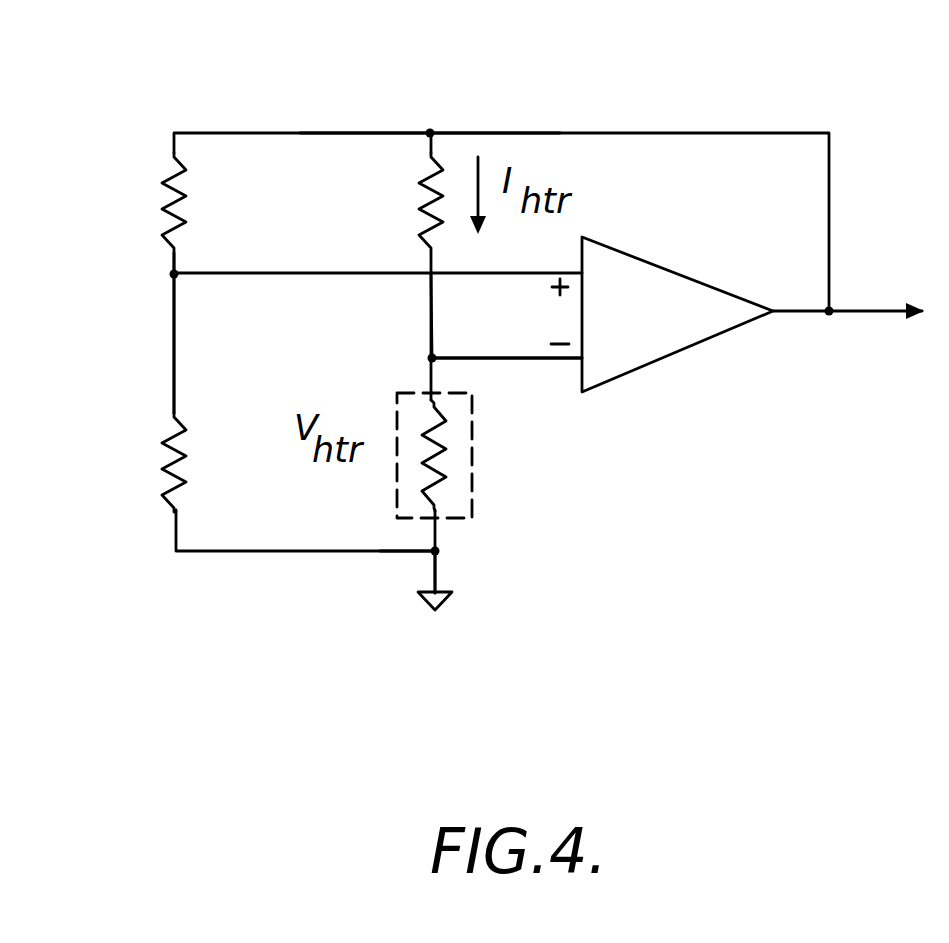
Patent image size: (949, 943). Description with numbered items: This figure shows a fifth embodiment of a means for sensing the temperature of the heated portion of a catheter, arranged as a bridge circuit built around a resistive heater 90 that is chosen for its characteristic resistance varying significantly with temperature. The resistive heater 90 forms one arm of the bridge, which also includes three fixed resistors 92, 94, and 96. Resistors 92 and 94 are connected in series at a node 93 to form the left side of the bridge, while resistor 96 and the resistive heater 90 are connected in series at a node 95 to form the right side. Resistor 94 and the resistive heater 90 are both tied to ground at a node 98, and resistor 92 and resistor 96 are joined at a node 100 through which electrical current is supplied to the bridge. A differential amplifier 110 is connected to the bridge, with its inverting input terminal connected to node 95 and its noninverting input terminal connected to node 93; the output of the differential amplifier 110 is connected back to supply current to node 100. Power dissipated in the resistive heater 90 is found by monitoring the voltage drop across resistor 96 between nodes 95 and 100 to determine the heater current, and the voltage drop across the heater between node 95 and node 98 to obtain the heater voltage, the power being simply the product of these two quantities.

The fixed resistor 92 is at (167, 206).
The node 93 is at (174, 333).
The fixed resistor 94 is at (171, 457).
The node 95 is at (431, 358).
The fixed resistor 96 is at (425, 200).
The node 100 is at (430, 131).
The resistive heater 90 is at (473, 449).
The node 98 is at (438, 550).
The differential amplifier 110 is at (680, 353).